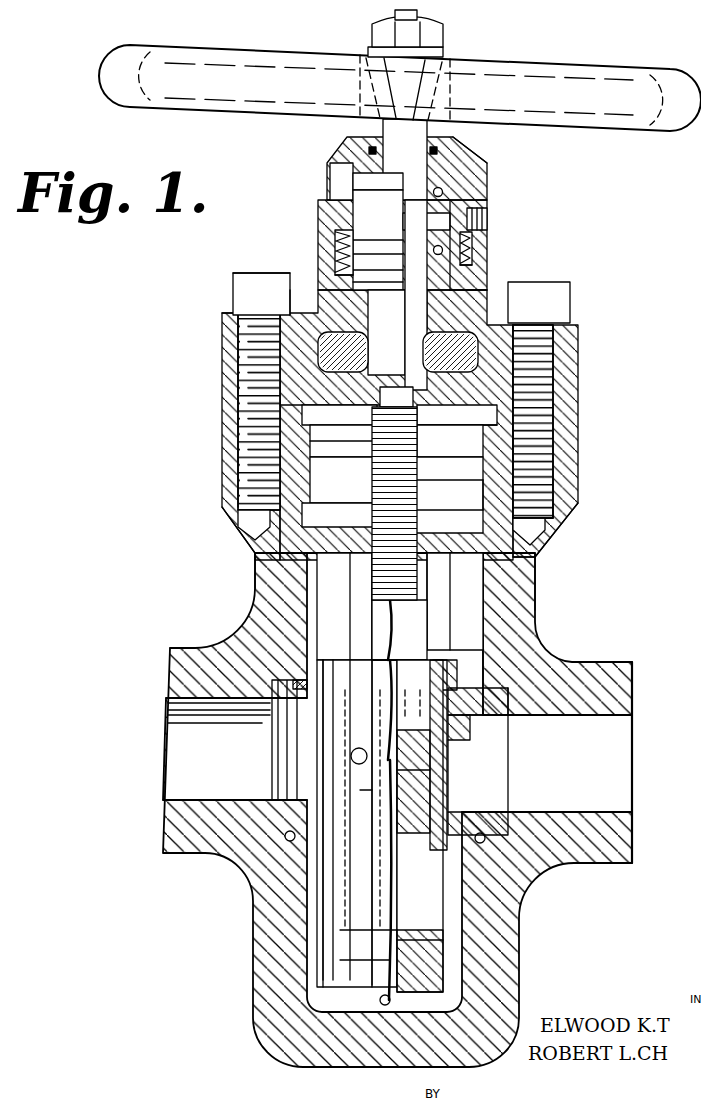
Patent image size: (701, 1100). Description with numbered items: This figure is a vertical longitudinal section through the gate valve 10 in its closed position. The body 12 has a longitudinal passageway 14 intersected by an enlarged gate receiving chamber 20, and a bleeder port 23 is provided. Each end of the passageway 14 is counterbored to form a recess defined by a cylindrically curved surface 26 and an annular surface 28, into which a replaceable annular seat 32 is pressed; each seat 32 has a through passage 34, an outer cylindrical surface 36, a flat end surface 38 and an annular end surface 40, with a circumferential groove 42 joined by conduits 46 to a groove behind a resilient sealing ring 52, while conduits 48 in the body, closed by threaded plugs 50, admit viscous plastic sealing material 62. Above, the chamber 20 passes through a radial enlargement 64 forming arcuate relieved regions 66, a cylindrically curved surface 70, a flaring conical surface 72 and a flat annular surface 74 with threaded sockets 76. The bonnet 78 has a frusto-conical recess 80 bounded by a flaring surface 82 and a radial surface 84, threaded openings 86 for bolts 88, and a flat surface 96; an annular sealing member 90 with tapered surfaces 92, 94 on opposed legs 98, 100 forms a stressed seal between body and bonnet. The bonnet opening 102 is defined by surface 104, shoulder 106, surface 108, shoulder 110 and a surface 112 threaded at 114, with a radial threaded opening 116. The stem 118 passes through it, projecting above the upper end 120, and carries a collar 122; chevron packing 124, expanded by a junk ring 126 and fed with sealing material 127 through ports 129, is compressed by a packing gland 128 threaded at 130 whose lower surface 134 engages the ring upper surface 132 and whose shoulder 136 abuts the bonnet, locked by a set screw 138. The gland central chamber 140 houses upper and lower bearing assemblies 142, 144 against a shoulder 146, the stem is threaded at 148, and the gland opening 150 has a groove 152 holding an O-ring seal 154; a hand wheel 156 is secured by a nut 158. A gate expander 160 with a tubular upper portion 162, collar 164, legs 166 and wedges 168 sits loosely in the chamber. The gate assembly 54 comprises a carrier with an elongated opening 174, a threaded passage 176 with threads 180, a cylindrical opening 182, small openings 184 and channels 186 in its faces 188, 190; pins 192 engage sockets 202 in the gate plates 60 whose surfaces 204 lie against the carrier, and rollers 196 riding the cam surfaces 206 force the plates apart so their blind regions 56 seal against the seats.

The gate valve 10 is at (235, 578).
The body 12 is at (605, 661).
The longitudinal passageway 14 is at (630, 777).
The gate receiving chamber 20 is at (397, 810).
The bleeder port 23 is at (383, 1005).
The cylindrically curved surface 26 is at (512, 657).
The annular radially extending surface 28 is at (500, 728).
The replaceable annular seat 32 is at (500, 806).
The through passage 34 is at (500, 756).
The outer cylindrical surface 36 is at (514, 694).
The flat annular end surface 38 is at (503, 713).
The annular end surface 40 is at (467, 762).
The circumferential groove 42 is at (395, 614).
The conduits 46 is at (456, 755).
The conduits 48 is at (520, 878).
The threaded plugs 50 is at (530, 890).
The resilient annular sealing ring 52 is at (394, 823).
The gate assembly 54 is at (318, 896).
The blind regions 56 is at (330, 746).
The gate plates 60 is at (305, 523).
The viscous plastic sealing material 62 is at (264, 740).
The first radial enlargement 64 is at (530, 563).
The arcuate relieved cylindrically curved regions 66 is at (400, 600).
The cylindrically curved upwardly extending surface 70 is at (325, 503).
The conically curved annular surface 72 is at (351, 480).
The flat annular horizontal surface 74 is at (232, 471).
The threaded sockets 76 is at (565, 503).
The bonnet 78 is at (320, 322).
The inverted frusto-conical recess 80 is at (396, 425).
The downwardly and outwardly flaring annular surface 82 is at (433, 582).
The radially extending annular surface 84 is at (339, 415).
The threaded openings 86 is at (238, 453).
The bolts 88 is at (570, 307).
The annular sealing member 90 is at (450, 441).
The sealing surface 92 is at (343, 441).
The sealing surface 94 is at (343, 451).
The downwardly facing flat annular surface 96 is at (570, 471).
The leg 98 is at (555, 432).
The leg 100 is at (560, 488).
The axially directed opening 102 is at (457, 416).
The cylindrically curved surface 104 is at (330, 391).
The upwardly facing annular shoulder 106 is at (398, 399).
The cylindrically curved surface 108 is at (262, 284).
The upwardly facing annular shoulder 110 is at (472, 292).
The generally cylindrically curved surface 112 is at (340, 274).
The threads 114 is at (335, 241).
The radially directed interiorly threaded opening 116 is at (475, 240).
The stem 118 is at (362, 127).
The upper end 120 is at (320, 203).
The collar 122 is at (360, 217).
The chevron packing 124 is at (459, 310).
The stem packing junk ring 126 is at (472, 266).
The viscous plastic sealing material 127 is at (428, 352).
The packing gland 128 is at (488, 178).
The ports 129 is at (623, 357).
The exterior threads 130 is at (472, 252).
The flat annular upper surface 132 is at (379, 242).
The lower flat annular surface 134 is at (378, 259).
The downwardly facing shoulder 136 is at (352, 181).
The set screw 138 is at (487, 218).
The central chamber 140 is at (330, 166).
The upper bearing assembly 142 is at (452, 190).
The lower bearing assembly 144 is at (378, 277).
The downwardly facing annular shoulder 146 is at (405, 159).
The threads 148 is at (448, 495).
The central opening 150 is at (468, 128).
The groove 152 is at (448, 171).
The O-ring seal 154 is at (445, 157).
The hand wheel 156 is at (540, 66).
The nut 158 is at (440, 33).
The gate expander 160 is at (364, 634).
The tubular upper portion 162 is at (470, 495).
The collar 164 is at (540, 530).
The legs 166 is at (395, 769).
The wedges 168 is at (353, 823).
The vertically elongated opening 174 is at (450, 601).
The vertically directed passage 176 is at (520, 588).
The threads 180 is at (399, 630).
The laterally directed cylindrical opening 182 is at (417, 934).
The laterally directed openings 184 is at (412, 786).
The channels 186 is at (345, 773).
The face 188 is at (320, 810).
The face 190 is at (447, 780).
The pins 192 is at (365, 933).
The gate plate expander rollers 196 is at (350, 758).
The sockets 202 is at (386, 809).
The surface 204 is at (391, 894).
The cam surfaces 206 is at (375, 782).